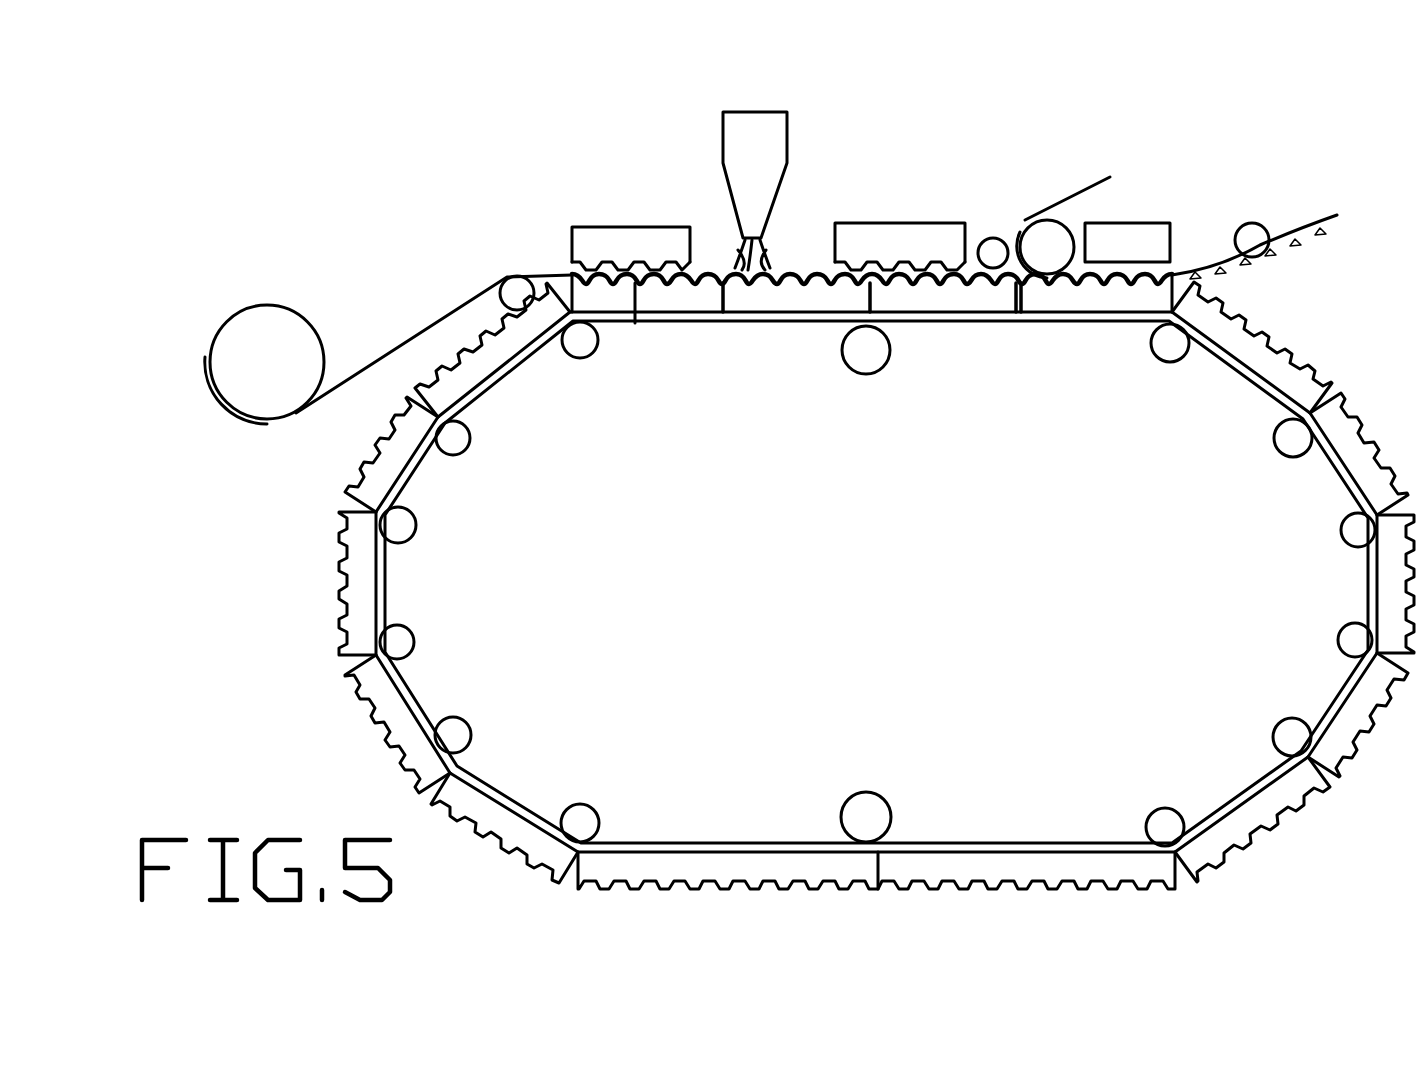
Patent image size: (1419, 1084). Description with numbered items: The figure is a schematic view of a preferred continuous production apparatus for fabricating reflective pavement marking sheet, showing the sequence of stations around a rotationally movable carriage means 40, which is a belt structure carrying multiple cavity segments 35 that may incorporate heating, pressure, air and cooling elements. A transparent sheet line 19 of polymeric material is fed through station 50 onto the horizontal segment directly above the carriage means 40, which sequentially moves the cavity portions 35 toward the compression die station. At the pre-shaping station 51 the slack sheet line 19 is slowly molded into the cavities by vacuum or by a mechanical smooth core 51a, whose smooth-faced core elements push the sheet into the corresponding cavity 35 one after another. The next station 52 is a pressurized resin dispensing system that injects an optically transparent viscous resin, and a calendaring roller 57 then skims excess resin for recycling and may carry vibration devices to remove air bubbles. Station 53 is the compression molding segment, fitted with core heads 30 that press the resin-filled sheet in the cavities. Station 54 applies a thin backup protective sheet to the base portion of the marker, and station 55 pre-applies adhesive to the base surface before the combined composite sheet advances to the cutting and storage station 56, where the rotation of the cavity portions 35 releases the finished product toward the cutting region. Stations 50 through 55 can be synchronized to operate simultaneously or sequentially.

The transparent sheet line 19 is at (370, 380).
The core heads 30 is at (940, 322).
The cavity segments 35 is at (357, 548).
The rotationally movable carriage means 40 is at (760, 835).
The sheet feeding station 50 is at (283, 300).
The pre-shaping station 51 is at (650, 225).
The mechanical smooth core 51a is at (635, 325).
The pressurized resin dispensing system 52 is at (775, 112).
The compression molding station 53 is at (890, 223).
The backup sheet application station 54 is at (1025, 218).
The adhesive pre-application station 55 is at (1135, 223).
The cutting and storage station 56 is at (1308, 225).
The calendaring roller 57 is at (993, 238).